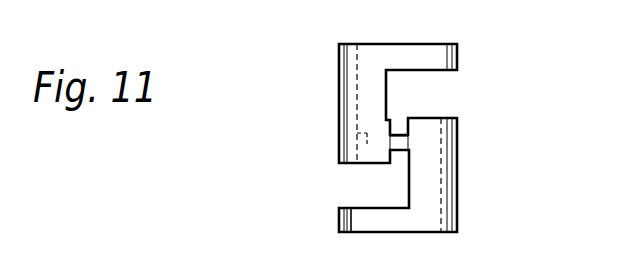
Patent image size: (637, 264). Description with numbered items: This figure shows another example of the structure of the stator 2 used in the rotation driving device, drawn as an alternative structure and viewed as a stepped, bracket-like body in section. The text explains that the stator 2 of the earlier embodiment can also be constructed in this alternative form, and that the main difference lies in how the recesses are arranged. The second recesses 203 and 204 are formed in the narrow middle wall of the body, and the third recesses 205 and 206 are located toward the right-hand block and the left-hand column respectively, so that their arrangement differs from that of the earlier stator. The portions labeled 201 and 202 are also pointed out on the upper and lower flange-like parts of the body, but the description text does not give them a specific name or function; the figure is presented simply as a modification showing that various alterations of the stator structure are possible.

The stator 2 is at (338, 61).
The upper flange portion 201 is at (542, 44).
The third recess 205 is at (549, 88).
The third recess 206 is at (365, 161).
The second recess 203 is at (401, 160).
The second recess 204 is at (293, 157).
The lower flange portion 202 is at (337, 199).